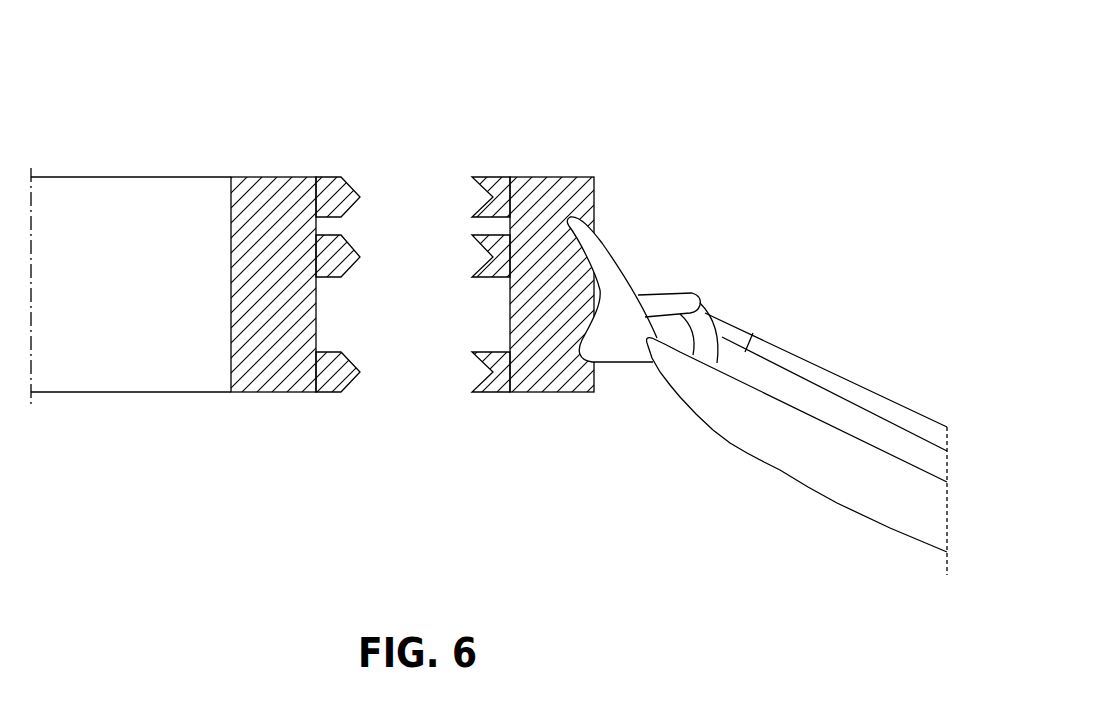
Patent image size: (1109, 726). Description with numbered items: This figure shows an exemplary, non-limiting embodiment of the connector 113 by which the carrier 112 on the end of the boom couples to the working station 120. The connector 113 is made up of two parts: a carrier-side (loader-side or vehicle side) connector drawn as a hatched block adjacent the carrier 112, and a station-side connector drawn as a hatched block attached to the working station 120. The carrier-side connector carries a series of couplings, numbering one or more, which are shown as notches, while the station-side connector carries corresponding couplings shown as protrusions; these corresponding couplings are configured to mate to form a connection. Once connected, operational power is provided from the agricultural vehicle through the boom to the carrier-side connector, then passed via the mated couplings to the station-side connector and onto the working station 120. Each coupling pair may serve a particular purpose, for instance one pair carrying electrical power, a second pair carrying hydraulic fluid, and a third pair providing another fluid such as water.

The working station 120 is at (83, 171).
The connector 113 is at (418, 341).
The carrier 112 is at (621, 253).